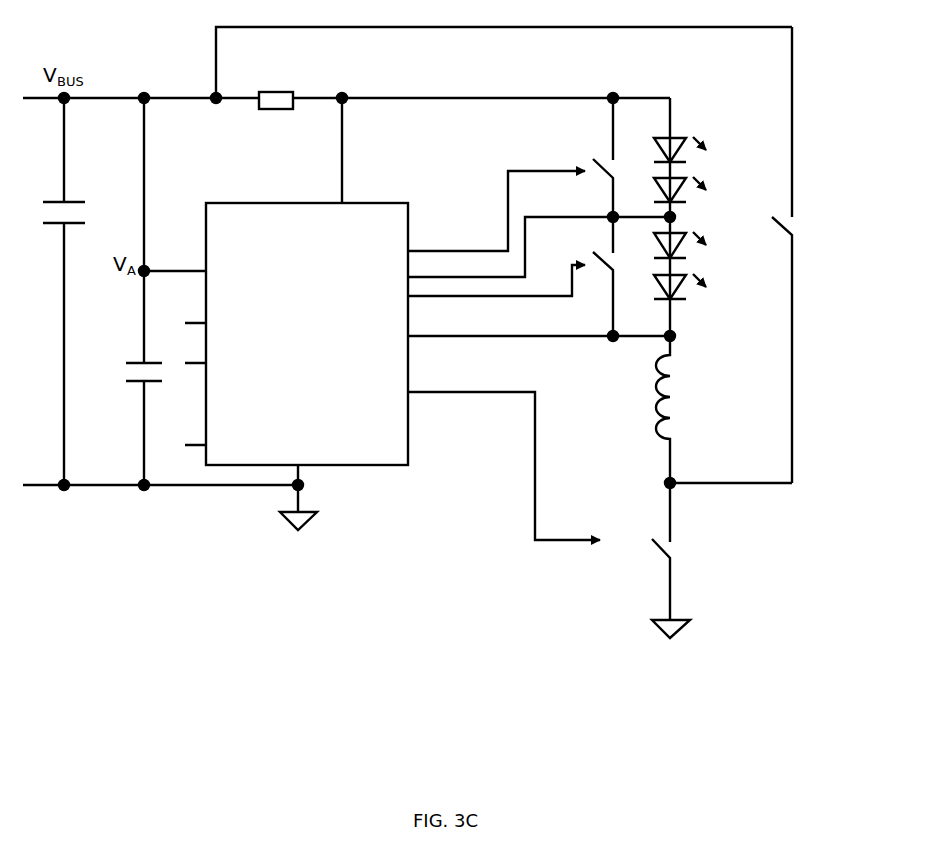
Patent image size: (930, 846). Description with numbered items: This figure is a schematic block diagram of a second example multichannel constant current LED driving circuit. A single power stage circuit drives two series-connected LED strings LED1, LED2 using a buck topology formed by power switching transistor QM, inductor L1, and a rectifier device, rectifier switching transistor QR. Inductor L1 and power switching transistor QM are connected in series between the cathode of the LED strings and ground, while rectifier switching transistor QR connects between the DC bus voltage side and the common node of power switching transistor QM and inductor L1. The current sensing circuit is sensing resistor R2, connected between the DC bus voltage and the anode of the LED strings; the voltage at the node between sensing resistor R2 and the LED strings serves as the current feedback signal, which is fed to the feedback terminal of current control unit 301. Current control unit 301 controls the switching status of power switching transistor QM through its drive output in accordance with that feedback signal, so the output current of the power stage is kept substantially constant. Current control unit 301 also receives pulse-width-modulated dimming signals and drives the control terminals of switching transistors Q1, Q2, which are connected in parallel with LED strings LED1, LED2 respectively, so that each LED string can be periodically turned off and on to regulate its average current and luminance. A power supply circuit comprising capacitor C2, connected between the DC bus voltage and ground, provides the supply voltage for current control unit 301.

The current control unit 301 is at (393, 460).
The sensing resistor R2 is at (276, 86).
The capacitor C2 is at (132, 291).
The inductor L1 is at (646, 409).
The switching transistor Q1 is at (586, 157).
The switching transistor Q2 is at (585, 276).
The rectifier switching transistor QR is at (799, 255).
The power switching transistor QM is at (655, 560).
The LED string LED1 is at (711, 157).
The LED string LED2 is at (711, 276).